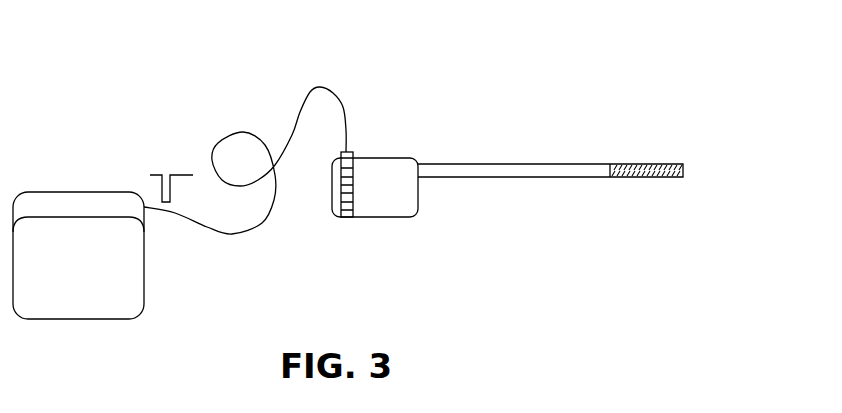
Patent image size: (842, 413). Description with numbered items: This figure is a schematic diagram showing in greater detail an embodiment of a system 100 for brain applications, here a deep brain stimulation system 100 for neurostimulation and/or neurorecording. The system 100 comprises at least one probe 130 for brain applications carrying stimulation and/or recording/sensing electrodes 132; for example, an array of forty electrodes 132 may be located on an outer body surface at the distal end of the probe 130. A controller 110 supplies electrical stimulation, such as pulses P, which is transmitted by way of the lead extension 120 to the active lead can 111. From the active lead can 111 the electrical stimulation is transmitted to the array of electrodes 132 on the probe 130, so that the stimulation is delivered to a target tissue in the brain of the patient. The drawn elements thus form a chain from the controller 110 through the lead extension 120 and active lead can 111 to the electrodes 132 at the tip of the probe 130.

The system 100 is at (175, 93).
The controller 110 is at (83, 228).
The pulses P is at (153, 175).
The lead extension 120 is at (243, 132).
The active lead can 111 is at (378, 217).
The probe 130 is at (520, 149).
The electrodes 132 is at (637, 178).